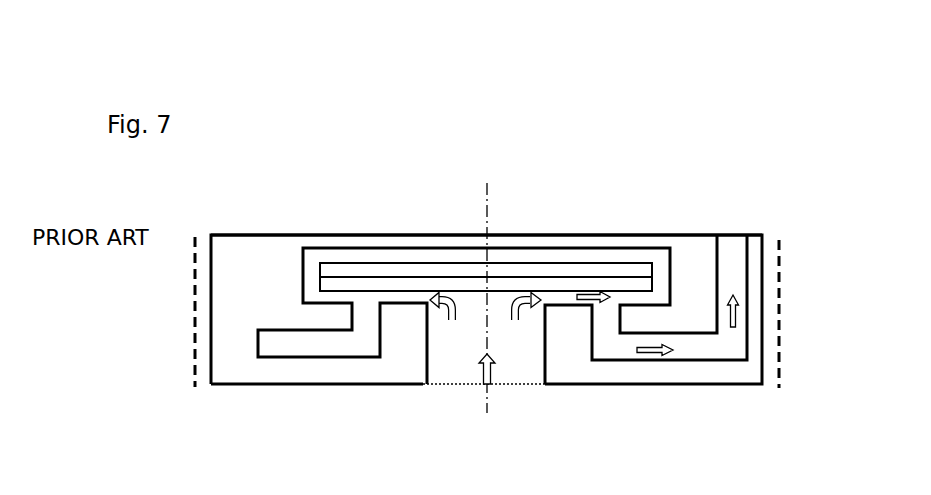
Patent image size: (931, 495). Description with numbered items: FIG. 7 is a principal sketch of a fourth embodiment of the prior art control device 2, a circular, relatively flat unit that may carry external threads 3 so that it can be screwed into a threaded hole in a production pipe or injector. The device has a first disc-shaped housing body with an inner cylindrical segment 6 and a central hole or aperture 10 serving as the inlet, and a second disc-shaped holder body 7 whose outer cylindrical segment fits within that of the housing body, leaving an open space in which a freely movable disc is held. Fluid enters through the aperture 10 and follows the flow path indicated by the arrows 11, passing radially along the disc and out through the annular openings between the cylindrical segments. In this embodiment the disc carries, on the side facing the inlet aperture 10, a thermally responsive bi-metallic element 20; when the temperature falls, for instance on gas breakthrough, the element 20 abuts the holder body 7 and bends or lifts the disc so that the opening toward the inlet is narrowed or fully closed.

The control device 2 is at (285, 401).
The external threads 3 is at (779, 252).
The inner cylindrical segment 6 is at (560, 345).
The second disc-shaped holder body 7 is at (365, 235).
The central hole or aperture 10 is at (455, 330).
The arrows 11 is at (485, 387).
The bi-metallic element 20 is at (410, 283).